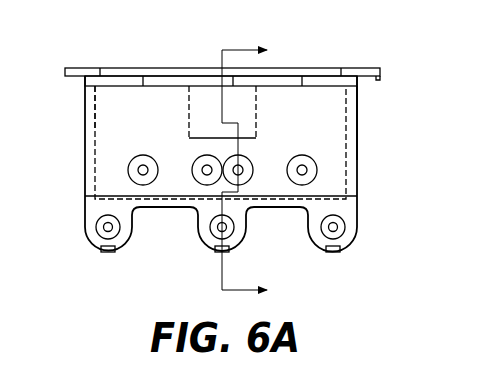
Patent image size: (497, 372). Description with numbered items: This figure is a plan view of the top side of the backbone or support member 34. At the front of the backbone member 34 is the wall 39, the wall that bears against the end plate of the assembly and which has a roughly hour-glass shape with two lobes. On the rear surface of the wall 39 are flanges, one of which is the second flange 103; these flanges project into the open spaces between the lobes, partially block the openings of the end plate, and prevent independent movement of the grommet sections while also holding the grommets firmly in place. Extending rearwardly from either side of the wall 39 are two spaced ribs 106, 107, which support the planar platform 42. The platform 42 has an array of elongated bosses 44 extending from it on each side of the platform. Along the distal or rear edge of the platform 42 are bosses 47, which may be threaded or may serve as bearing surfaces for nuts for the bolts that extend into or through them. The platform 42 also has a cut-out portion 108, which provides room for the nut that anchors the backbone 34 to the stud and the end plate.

The backbone member 34 is at (66, 118).
The wall 39 is at (83, 67).
The planar platform 42 is at (110, 186).
The elongated bosses 44 is at (192, 163).
The bosses 47 is at (94, 242).
The second flange 103 is at (317, 80).
The rib 106 is at (97, 114).
The rib 107 is at (359, 110).
The cut-out portion 108 is at (191, 115).